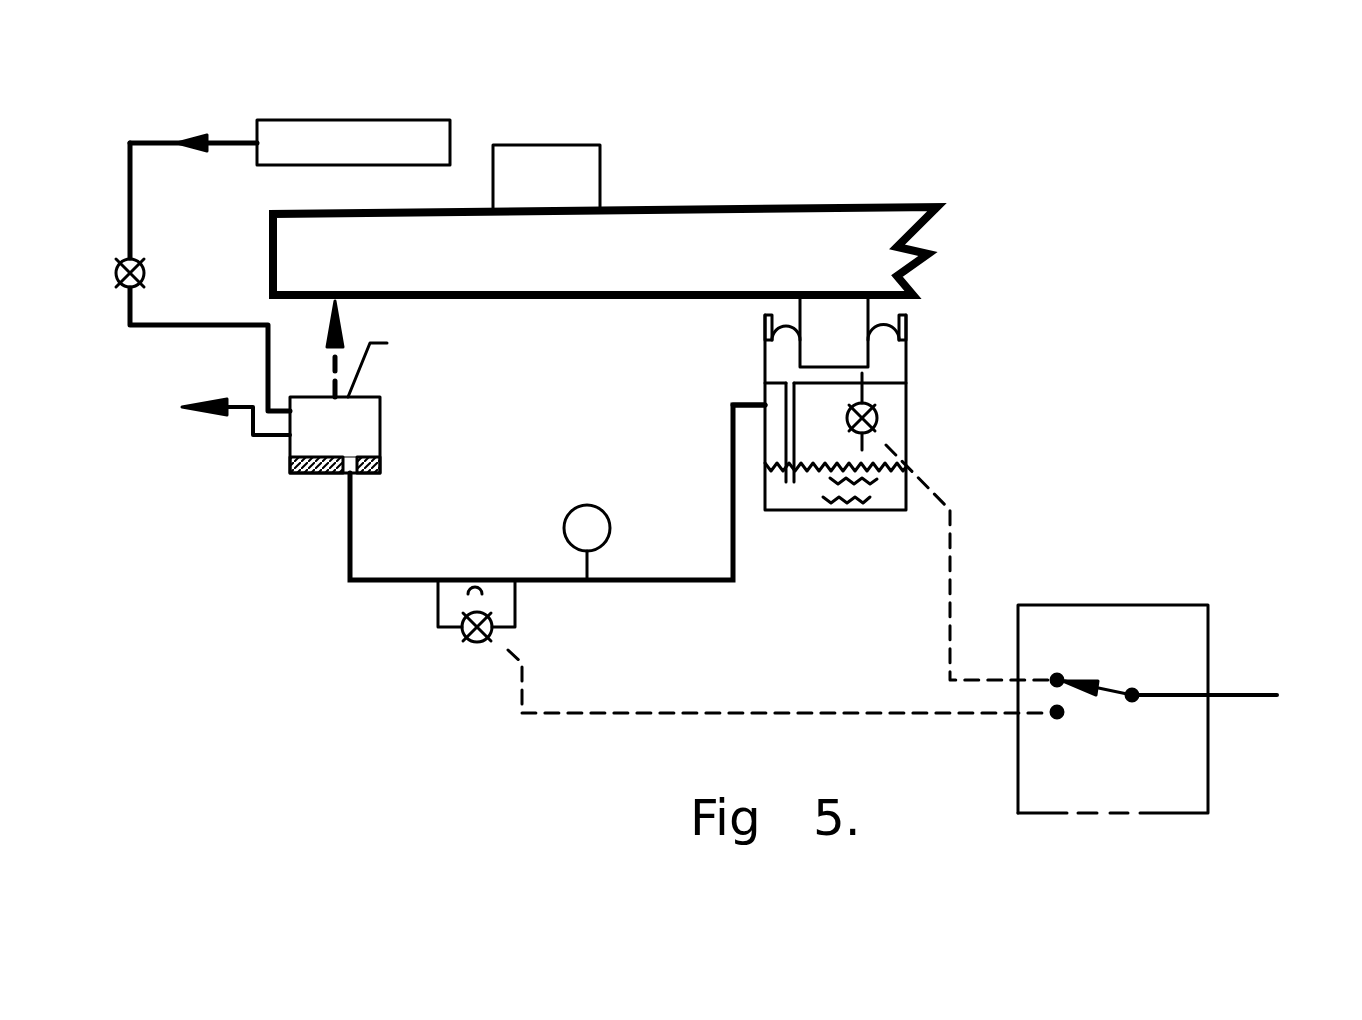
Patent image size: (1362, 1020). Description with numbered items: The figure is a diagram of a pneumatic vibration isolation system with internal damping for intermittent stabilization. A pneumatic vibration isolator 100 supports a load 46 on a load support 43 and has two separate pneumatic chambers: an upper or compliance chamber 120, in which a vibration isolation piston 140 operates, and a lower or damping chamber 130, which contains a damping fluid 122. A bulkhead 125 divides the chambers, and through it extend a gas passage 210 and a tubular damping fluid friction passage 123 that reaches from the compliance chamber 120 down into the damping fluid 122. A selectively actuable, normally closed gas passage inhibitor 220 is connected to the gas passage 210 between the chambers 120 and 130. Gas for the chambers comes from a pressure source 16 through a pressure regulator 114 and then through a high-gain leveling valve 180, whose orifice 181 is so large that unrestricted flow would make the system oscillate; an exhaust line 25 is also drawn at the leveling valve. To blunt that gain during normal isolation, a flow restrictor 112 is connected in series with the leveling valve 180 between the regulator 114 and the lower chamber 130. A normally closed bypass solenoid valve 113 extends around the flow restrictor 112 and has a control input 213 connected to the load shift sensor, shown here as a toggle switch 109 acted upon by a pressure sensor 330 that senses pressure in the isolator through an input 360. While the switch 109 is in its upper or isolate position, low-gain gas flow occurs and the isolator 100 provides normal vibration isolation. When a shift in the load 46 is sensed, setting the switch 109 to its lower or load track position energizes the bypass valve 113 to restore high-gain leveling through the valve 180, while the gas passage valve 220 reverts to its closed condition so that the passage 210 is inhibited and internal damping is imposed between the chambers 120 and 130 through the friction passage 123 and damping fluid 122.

The pressure source 16 is at (350, 111).
The pressure regulator 114 is at (184, 259).
The load 46 is at (566, 197).
The load support 43 is at (568, 275).
The vibration isolation piston 140 is at (838, 323).
The bulkhead 125 is at (907, 322).
The gas passage 210 is at (891, 363).
The gas passage inhibitor 220 is at (932, 411).
The second pneumatic chamber 130 is at (900, 473).
The damping fluid 122 is at (835, 443).
The first pneumatic chamber 120 is at (705, 362).
The pneumatic vibration isolator 100 is at (702, 395).
The damping fluid friction passage 123 is at (717, 435).
The exhaust line 25 is at (160, 389).
The high-gain leveling valve 180 is at (379, 412).
The orifice 181 is at (267, 521).
The pressure sensor 330 is at (516, 505).
The input 360 is at (557, 492).
The flow restrictor 112 is at (475, 568).
The bypass solenoid valve 113 is at (431, 679).
The control input 213 is at (779, 681).
The toggle switch 109 is at (1179, 716).